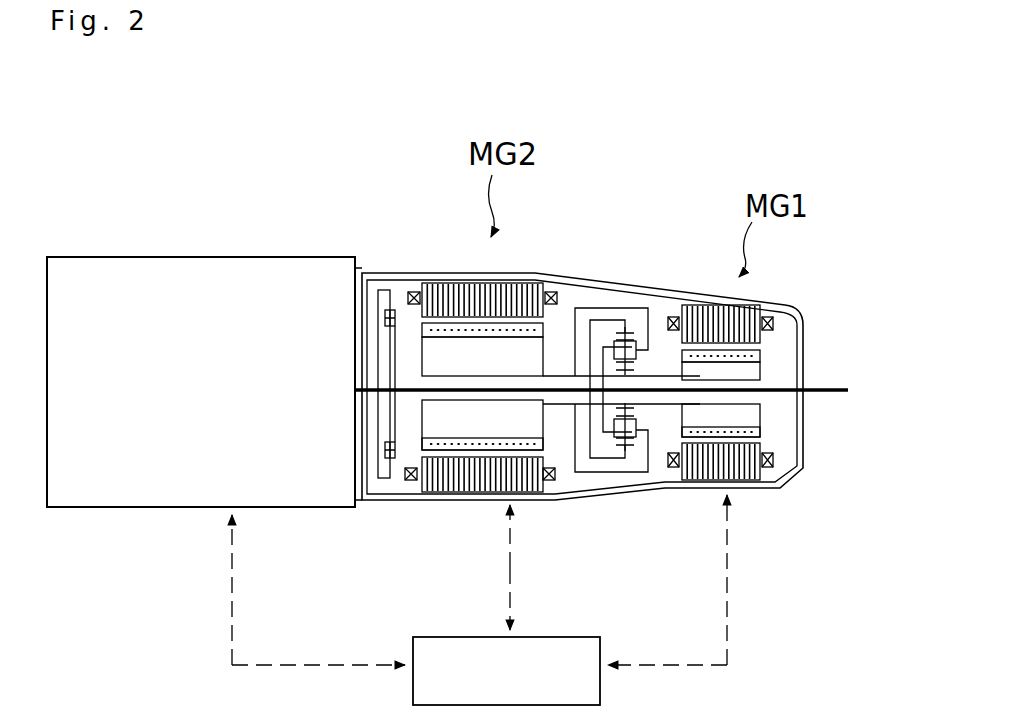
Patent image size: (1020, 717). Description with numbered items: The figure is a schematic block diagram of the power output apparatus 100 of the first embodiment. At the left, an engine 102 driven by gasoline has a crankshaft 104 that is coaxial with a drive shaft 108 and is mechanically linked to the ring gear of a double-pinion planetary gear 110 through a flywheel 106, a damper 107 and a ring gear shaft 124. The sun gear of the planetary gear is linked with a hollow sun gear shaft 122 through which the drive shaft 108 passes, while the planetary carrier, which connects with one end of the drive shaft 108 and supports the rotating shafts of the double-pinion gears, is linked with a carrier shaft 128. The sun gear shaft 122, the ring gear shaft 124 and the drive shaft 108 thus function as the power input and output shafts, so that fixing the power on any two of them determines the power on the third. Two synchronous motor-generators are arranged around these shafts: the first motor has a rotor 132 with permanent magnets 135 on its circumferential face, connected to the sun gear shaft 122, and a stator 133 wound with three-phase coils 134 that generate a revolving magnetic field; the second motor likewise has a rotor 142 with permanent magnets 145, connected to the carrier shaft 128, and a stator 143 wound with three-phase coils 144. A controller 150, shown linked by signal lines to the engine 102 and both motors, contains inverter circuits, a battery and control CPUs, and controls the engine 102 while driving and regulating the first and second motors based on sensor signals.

The power output apparatus 100 is at (716, 124).
The engine 102 is at (143, 257).
The crankshaft 104 is at (363, 262).
The flywheel 106 is at (378, 290).
The damper 107 is at (396, 322).
The drive shaft 108 is at (843, 393).
The double-pinion planetary gear 110 is at (664, 253).
The sun gear shaft 122 is at (660, 406).
The ring gear shaft 124 is at (403, 398).
The carrier shaft 128 is at (560, 474).
The rotor 132 is at (765, 370).
The stator 133 is at (740, 323).
The three-phase coils 134 is at (800, 308).
The permanent magnets 135 is at (773, 323).
The rotor 142 is at (488, 355).
The stator 143 is at (452, 283).
The three-phase coils 144 is at (552, 293).
The permanent magnets 145 is at (527, 332).
The controller 150 is at (568, 637).